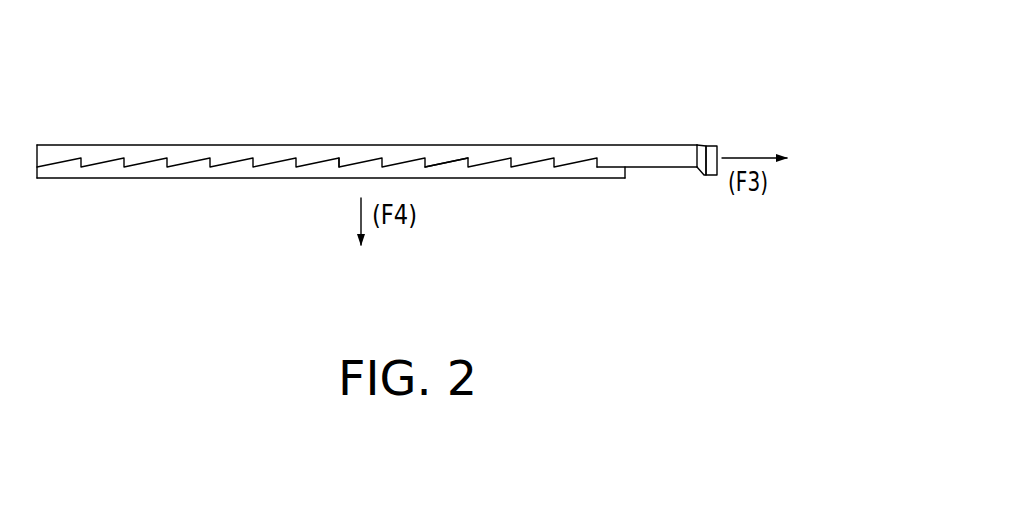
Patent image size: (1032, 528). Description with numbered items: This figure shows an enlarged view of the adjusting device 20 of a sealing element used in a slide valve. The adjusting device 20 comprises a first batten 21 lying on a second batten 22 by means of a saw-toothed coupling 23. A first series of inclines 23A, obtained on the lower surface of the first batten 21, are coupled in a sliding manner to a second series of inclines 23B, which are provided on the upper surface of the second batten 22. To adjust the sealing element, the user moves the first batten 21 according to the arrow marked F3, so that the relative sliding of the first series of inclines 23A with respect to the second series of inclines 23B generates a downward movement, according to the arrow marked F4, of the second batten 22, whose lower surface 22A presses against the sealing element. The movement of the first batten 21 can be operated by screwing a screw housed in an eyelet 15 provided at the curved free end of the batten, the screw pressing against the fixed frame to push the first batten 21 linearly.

The adjusting device 20 is at (382, 147).
The first batten 21 is at (589, 146).
The second batten 22 is at (370, 205).
The lower surface 22A is at (212, 180).
The saw-toothed coupling 23 is at (317, 117).
The first series of inclines 23A is at (456, 166).
The second series of inclines 23B is at (352, 163).
The eyelet 15 is at (697, 145).